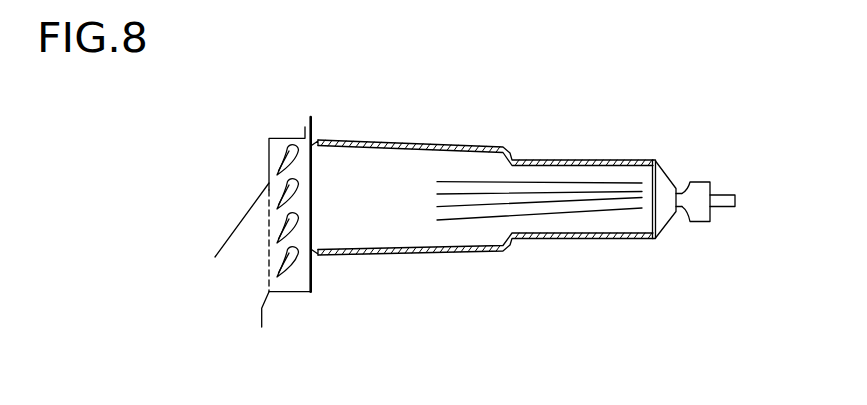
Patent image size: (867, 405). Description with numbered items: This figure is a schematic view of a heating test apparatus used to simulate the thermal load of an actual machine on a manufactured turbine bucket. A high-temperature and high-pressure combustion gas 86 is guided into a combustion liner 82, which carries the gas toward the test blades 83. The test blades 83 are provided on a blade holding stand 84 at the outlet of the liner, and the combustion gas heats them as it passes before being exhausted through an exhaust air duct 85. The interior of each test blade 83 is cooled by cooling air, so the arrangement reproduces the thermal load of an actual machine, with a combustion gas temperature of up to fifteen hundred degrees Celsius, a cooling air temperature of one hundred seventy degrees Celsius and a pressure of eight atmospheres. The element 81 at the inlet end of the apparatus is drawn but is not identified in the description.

The connector / nozzle fitting 81 is at (705, 181).
The duct 82 is at (460, 145).
The fan blades 83 is at (300, 217).
The fan housing plate 84 is at (311, 175).
The partition wall 85 is at (231, 233).
The air flow lines 86 is at (577, 212).